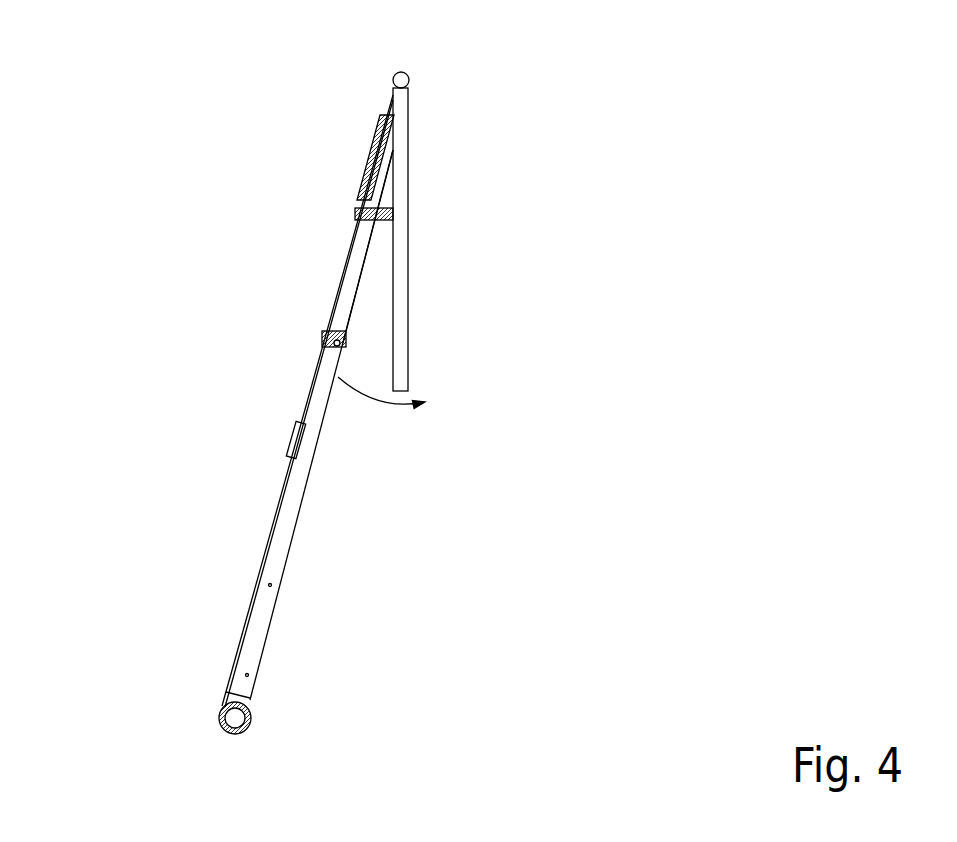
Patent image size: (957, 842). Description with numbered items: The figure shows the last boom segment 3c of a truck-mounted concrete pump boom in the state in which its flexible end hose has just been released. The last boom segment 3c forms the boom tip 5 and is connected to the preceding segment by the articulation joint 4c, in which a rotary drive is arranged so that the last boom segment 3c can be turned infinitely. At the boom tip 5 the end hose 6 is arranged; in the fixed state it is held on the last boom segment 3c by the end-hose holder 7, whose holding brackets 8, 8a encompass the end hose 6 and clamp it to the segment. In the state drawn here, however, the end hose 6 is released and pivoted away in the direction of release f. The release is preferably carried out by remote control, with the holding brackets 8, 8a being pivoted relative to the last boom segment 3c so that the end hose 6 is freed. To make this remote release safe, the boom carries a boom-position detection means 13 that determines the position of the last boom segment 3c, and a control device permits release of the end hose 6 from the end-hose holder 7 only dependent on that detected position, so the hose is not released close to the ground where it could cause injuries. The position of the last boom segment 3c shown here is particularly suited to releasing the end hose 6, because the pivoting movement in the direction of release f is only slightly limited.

The last boom segment 3c is at (122, 140).
The articulation joint 4c is at (218, 719).
The boom tip 5 is at (394, 77).
The end hose 6 is at (407, 159).
The end-hose holder 7 is at (372, 281).
The holding bracket 8 is at (391, 221).
The holding bracket 8a is at (356, 344).
The boom-position detection means 13 is at (299, 452).
The direction of release f is at (371, 400).